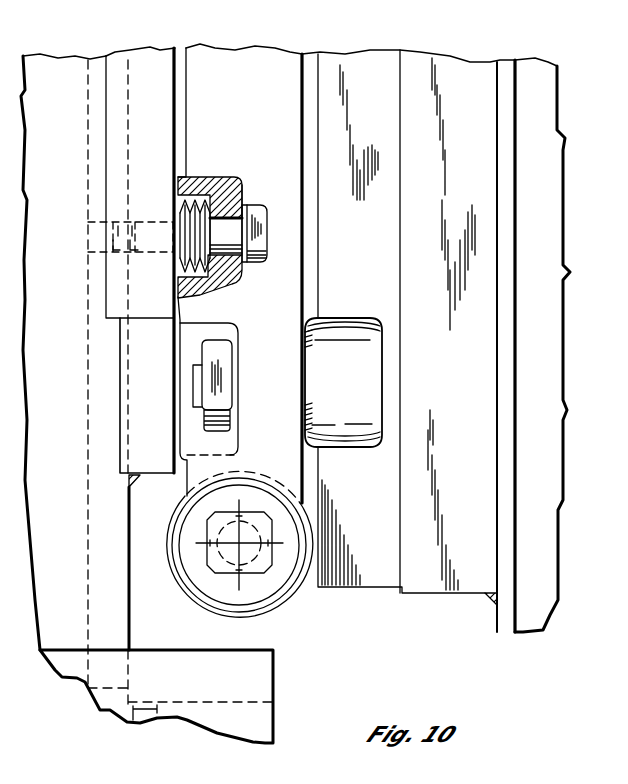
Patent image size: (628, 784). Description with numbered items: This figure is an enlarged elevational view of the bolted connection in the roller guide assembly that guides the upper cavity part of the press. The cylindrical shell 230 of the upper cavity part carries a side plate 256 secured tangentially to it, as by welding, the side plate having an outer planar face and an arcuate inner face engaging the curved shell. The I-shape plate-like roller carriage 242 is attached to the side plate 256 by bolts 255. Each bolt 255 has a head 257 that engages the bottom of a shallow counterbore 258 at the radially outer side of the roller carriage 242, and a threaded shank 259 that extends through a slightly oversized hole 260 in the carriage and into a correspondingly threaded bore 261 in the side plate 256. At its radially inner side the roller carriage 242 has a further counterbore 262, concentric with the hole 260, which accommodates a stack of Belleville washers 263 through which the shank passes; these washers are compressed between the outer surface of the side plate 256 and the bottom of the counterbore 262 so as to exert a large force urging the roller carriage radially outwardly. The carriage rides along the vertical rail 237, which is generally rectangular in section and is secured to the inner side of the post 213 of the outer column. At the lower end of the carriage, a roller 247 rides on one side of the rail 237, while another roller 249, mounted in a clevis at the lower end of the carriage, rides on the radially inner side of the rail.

The cylindrical shell 230 is at (47, 70).
The side plate 256 is at (152, 62).
The roller carriage 242 is at (240, 70).
The vertical rail 237 is at (359, 58).
The stack of Belleville washers 263 is at (178, 200).
The oversized hole 260 is at (234, 200).
The shallow counterbore 258 is at (248, 195).
The head 257 is at (266, 217).
The bolt 255 is at (272, 240).
The threaded shank 259 is at (227, 240).
The threaded bore 261 is at (113, 236).
The counterbore 262 is at (176, 263).
The roller 247 is at (360, 318).
The roller 249 is at (278, 603).
The post 213 is at (496, 618).